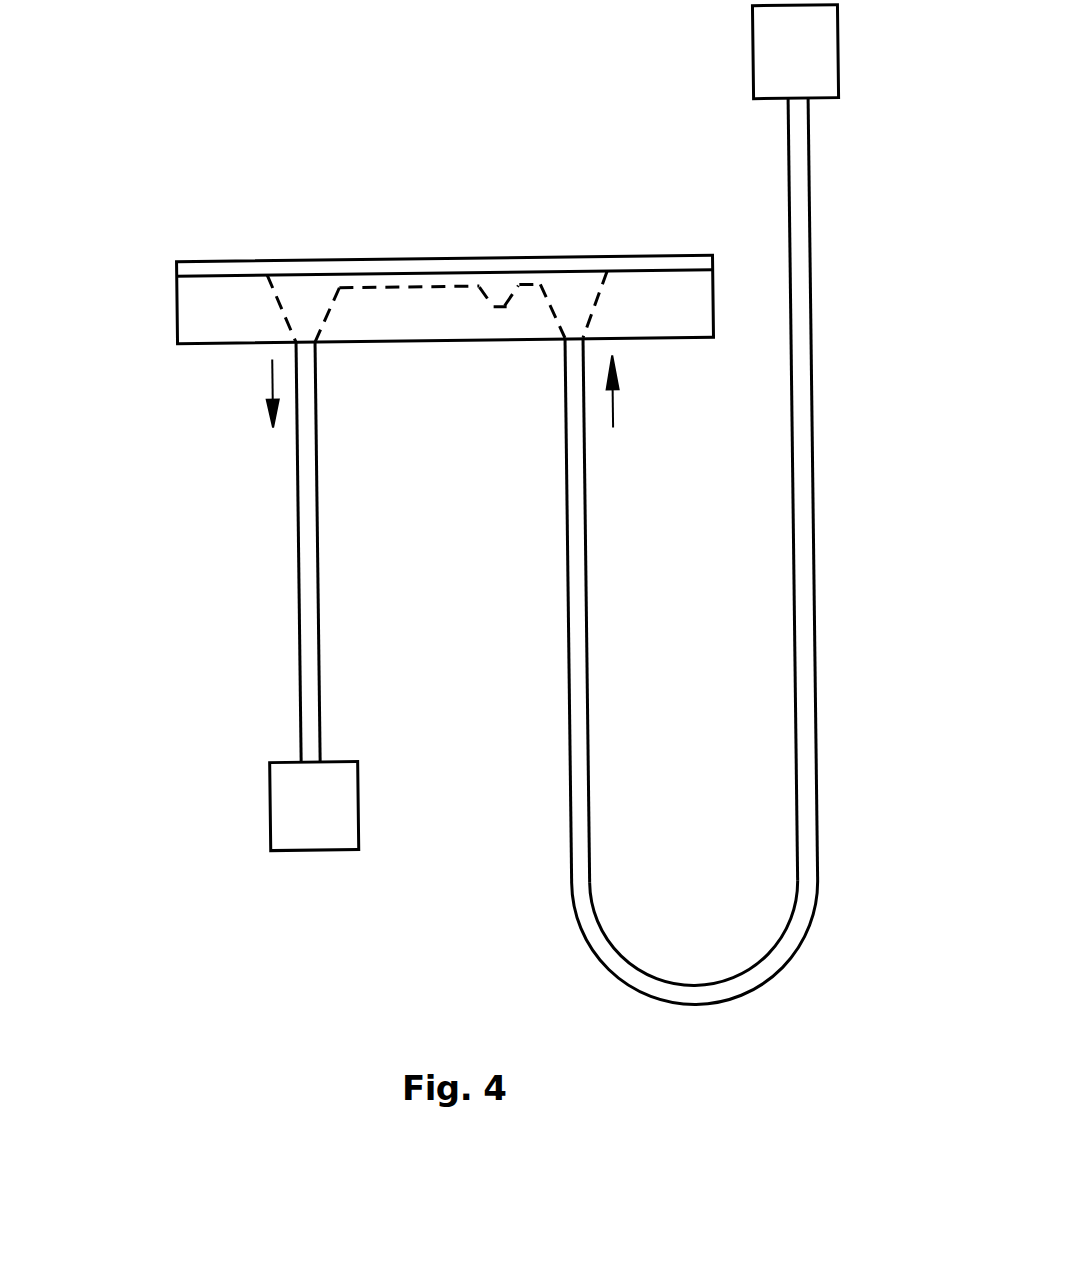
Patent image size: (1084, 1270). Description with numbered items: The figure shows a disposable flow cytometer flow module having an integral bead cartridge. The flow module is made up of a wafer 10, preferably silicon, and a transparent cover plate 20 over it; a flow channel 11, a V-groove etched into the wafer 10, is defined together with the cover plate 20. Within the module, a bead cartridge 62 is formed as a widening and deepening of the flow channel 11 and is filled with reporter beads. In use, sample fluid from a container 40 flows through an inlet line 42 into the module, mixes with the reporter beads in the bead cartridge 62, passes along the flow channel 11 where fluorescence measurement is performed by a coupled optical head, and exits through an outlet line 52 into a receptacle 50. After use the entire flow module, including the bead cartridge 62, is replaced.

The wafer 10 is at (178, 300).
The flow channel 11 is at (385, 287).
The transparent cover plate 20 is at (217, 257).
The container 40 is at (842, 37).
The inlet line 42 is at (583, 531).
The receptacle 50 is at (264, 805).
The outlet line 52 is at (315, 597).
The bead cartridge 62 is at (499, 306).